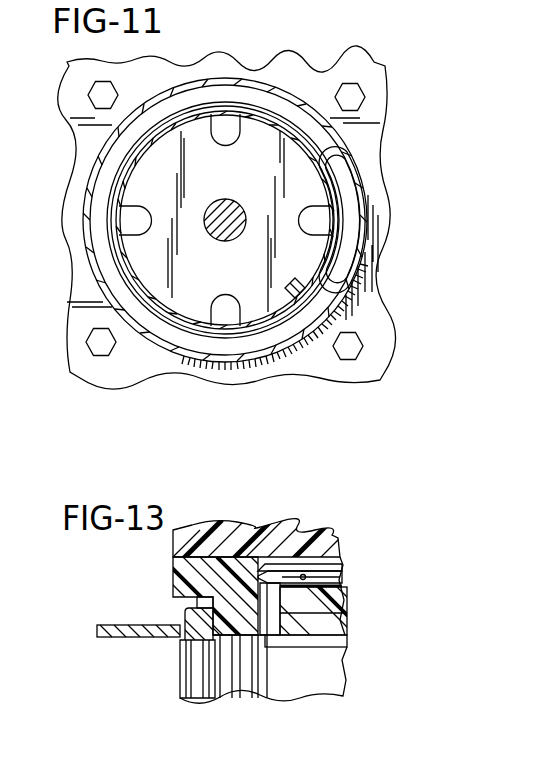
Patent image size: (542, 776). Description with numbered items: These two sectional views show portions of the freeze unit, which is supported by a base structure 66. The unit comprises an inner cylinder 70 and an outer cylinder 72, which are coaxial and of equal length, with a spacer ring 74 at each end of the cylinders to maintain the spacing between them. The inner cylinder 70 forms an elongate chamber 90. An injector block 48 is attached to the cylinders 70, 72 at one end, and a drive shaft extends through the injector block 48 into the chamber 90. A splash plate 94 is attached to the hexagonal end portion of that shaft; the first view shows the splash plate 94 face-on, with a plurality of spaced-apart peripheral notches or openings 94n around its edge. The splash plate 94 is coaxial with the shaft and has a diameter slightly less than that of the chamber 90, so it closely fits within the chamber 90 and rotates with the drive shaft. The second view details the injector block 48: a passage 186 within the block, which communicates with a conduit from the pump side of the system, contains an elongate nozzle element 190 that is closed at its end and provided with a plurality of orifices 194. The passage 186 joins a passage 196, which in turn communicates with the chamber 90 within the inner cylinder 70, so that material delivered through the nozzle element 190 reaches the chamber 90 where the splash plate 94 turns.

In FIG. 11, the splash plate 94 is at (237, 187).
In FIG. 11, the peripheral notches or openings 94n is at (240, 130).
In FIG. 13, the injector block 48 is at (218, 526).
In FIG. 13, the spacer ring 74 is at (183, 612).
In FIG. 13, the base structure 66 is at (135, 637).
In FIG. 13, the outer cylinder 72 is at (178, 683).
In FIG. 13, the inner cylinder 70 is at (200, 698).
In FIG. 13, the elongate chamber 90 is at (318, 685).
In FIG. 13, the orifices 194 is at (306, 575).
In FIG. 13, the passage 186 is at (340, 560).
In FIG. 13, the elongate nozzle element 190 is at (343, 577).
In FIG. 13, the passage 196 is at (346, 613).